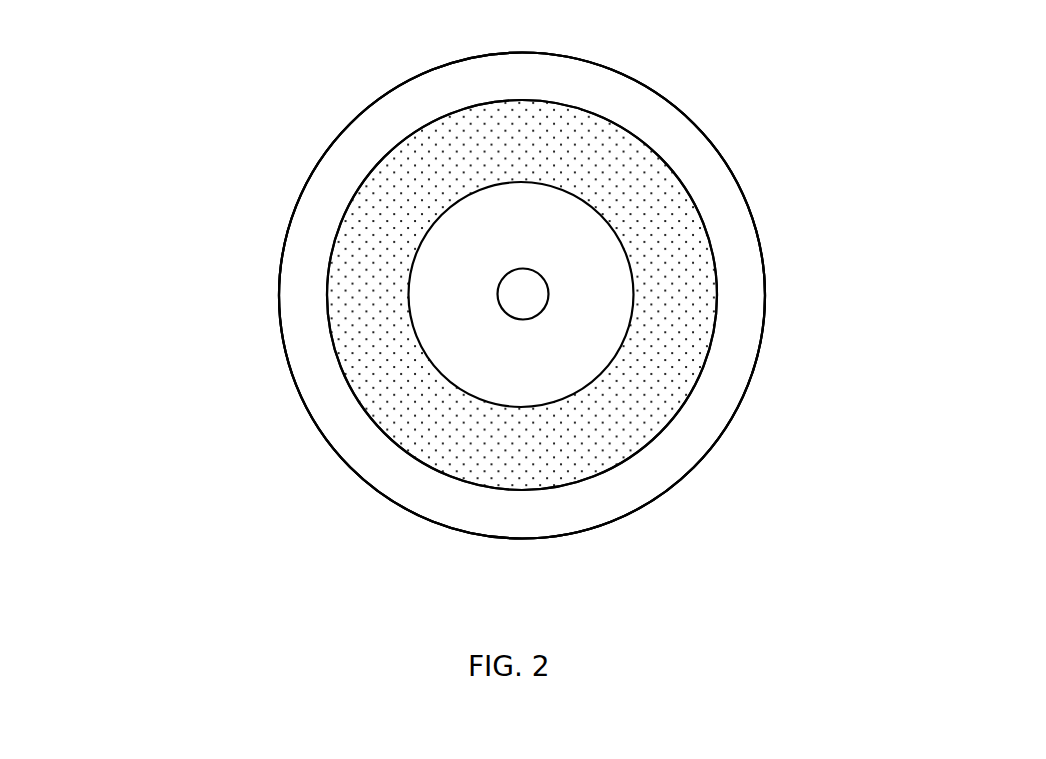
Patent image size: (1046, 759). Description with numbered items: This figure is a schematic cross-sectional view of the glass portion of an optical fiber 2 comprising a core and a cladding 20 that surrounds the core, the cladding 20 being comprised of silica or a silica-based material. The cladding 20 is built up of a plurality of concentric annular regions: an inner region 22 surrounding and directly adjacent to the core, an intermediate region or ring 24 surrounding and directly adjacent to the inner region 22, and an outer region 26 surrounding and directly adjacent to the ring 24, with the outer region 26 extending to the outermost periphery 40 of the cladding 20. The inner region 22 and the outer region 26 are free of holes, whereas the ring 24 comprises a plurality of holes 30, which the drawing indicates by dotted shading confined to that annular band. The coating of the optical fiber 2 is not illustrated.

The optical fiber 2 is at (185, 443).
The cladding 20 is at (645, 101).
The inner region 22 is at (561, 240).
The intermediate region (ring) 24 is at (650, 250).
The outer region 26 is at (742, 245).
The holes 30 is at (647, 393).
The outermost periphery 40 is at (768, 319).